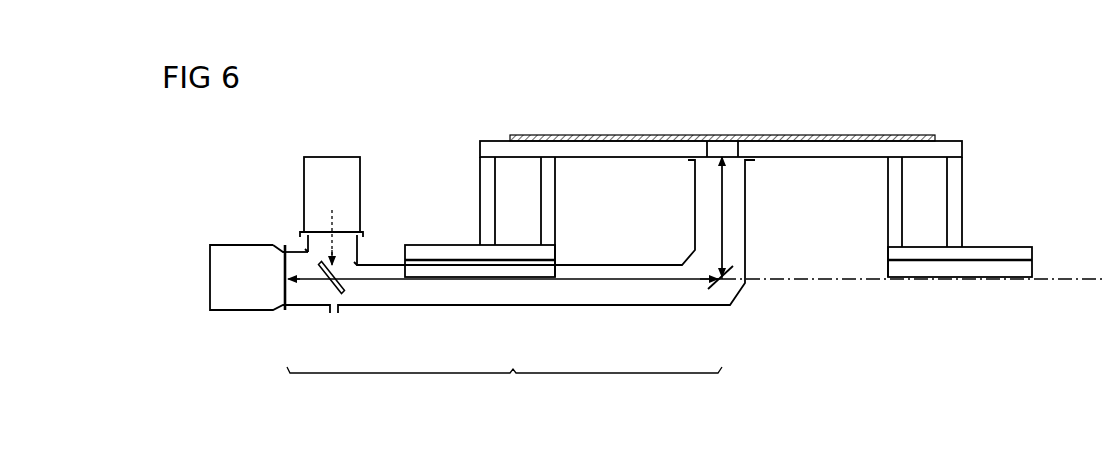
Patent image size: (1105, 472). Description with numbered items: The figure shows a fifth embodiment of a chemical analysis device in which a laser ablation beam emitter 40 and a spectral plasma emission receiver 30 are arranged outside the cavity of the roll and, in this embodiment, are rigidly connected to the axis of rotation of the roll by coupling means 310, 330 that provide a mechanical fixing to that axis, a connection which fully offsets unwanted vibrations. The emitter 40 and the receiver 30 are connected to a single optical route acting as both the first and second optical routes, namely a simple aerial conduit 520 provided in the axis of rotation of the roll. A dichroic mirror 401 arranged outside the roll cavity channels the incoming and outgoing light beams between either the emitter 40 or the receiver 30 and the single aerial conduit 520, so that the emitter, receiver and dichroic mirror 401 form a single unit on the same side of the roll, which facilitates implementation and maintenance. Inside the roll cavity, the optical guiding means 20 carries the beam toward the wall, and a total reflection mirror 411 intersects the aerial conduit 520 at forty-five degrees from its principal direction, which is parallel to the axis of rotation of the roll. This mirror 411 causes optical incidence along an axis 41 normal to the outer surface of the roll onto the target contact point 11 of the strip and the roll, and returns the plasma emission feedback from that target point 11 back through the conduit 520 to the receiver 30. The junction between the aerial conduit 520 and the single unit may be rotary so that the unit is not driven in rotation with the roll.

The target contact point 11 is at (722, 135).
The optical guiding means 20 is at (745, 237).
The spectral plasma emission receiver 30 is at (222, 281).
The laser ablation beam emitter 40 is at (334, 170).
The axis 41 is at (723, 200).
The coupling means 310 is at (362, 253).
The coupling means 330 is at (306, 306).
The dichroic mirror 401 is at (329, 289).
The total reflection mirror 411 is at (719, 285).
The aerial conduit 520 is at (573, 306).